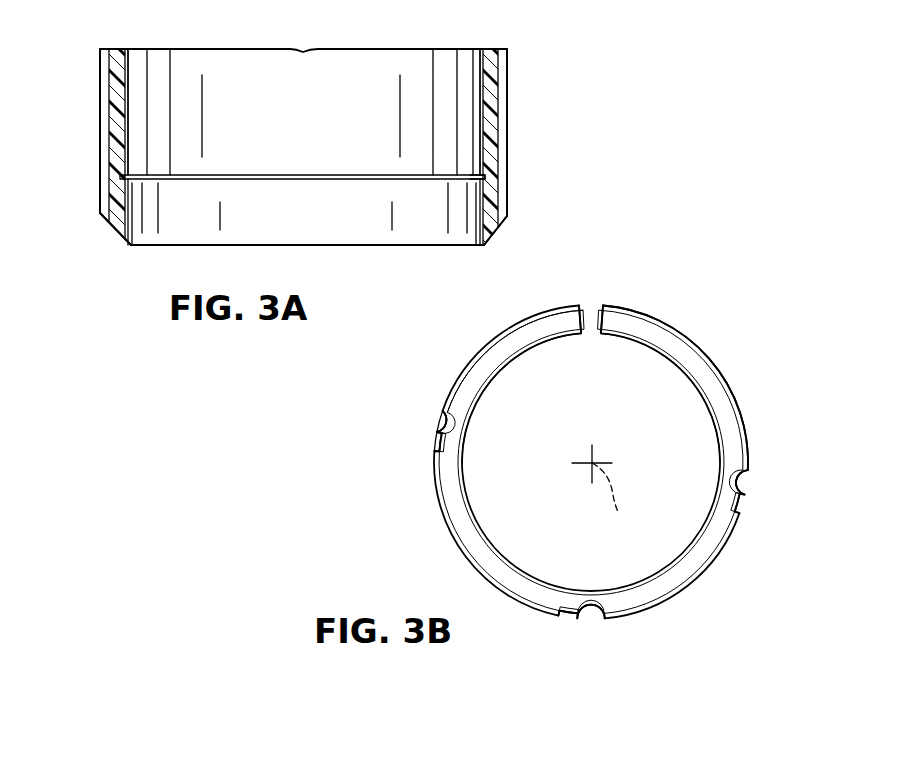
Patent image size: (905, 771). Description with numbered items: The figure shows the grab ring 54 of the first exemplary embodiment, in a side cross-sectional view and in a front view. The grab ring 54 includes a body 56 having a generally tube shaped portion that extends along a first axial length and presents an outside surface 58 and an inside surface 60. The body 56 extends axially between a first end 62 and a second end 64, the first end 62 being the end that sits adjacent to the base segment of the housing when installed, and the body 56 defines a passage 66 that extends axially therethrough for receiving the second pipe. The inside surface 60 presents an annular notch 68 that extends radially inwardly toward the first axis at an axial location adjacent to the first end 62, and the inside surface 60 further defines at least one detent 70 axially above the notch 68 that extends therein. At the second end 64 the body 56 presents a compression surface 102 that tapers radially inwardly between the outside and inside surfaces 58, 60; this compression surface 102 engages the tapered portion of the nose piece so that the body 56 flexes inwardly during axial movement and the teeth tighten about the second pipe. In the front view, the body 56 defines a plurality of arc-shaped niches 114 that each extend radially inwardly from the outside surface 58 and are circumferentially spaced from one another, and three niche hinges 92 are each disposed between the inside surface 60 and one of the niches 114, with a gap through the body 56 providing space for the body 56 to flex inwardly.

In FIG. 3A, the grab ring 54 is at (512, 66).
In FIG. 3B, the grab ring 54 is at (686, 324).
In FIG. 3A, the body 56 is at (100, 100).
In FIG. 3B, the body 56 is at (716, 360).
In FIG. 3A, the outside surface 58 is at (507, 107).
In FIG. 3B, the outside surface 58 is at (446, 384).
In FIG. 3A, the inside surface 60 is at (478, 158).
In FIG. 3B, the inside surface 60 is at (486, 521).
In FIG. 3A, the first end 62 is at (104, 49).
In FIG. 3A, the second end 64 is at (130, 246).
In FIG. 3B, the second end 64 is at (497, 368).
In FIG. 3A, the passage 66 is at (128, 146).
In FIG. 3B, the passage 66 is at (707, 407).
In FIG. 3A, the annular notch 68 is at (472, 180).
In FIG. 3A, the detent 70 is at (143, 176).
In FIG. 3B, the niche hinge 92 is at (436, 440).
In FIG. 3A, the compression surface 102 is at (486, 243).
In FIG. 3B, the compression surface 102 is at (544, 325).
In FIG. 3B, the arc-shaped niche 114 is at (442, 416).